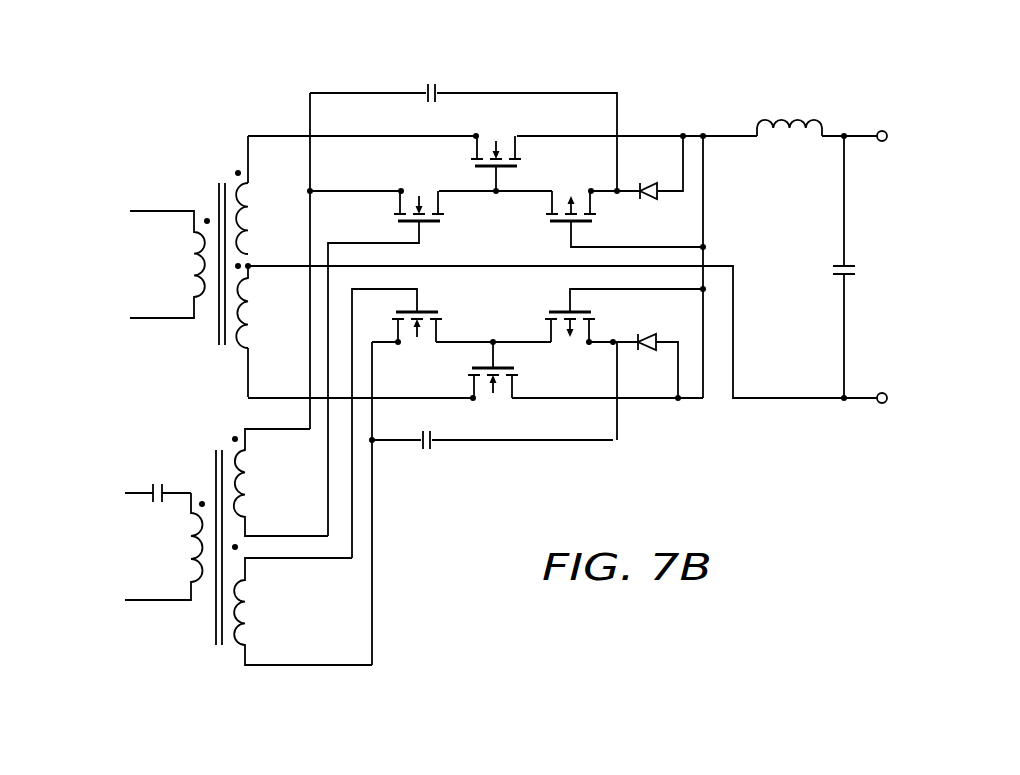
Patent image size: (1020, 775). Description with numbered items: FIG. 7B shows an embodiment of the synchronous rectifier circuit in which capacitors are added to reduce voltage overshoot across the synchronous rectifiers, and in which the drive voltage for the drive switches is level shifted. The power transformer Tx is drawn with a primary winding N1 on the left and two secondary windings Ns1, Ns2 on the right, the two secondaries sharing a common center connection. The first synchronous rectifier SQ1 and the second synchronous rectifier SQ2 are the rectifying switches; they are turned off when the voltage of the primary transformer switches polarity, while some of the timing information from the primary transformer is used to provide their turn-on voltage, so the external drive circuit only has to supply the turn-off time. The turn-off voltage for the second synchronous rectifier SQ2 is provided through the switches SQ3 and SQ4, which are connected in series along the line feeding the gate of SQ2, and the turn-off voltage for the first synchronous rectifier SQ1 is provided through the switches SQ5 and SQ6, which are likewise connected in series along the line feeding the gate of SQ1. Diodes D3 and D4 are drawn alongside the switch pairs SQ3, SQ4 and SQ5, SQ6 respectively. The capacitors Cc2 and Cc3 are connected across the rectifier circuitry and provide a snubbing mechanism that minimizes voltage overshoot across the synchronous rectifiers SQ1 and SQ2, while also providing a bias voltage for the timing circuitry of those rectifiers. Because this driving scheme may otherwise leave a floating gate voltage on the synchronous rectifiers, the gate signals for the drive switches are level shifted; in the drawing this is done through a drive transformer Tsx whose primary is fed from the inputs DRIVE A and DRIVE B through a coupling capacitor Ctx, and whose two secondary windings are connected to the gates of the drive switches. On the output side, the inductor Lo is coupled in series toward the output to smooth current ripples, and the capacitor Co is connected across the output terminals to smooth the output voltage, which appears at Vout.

The main power transformer Tx is at (223, 244).
The primary winding of transformer Tx N1 is at (170, 264).
The first secondary winding Ns1 is at (258, 219).
The second secondary winding Ns2 is at (259, 305).
The capacitor Cc2 is at (431, 80).
The capacitor Cc3 is at (405, 454).
The first synchronous rectifier SQ1 is at (493, 380).
The second synchronous rectifier SQ2 is at (496, 154).
The switch SQ3 is at (626, 208).
The switch SQ4 is at (375, 194).
The switch SQ5 is at (417, 340).
The switch SQ6 is at (625, 327).
The diode D3 is at (661, 166).
The diode D4 is at (645, 367).
The inductor Lo is at (761, 119).
The capacitor Co is at (830, 267).
The output voltage terminals Vout is at (902, 267).
The drive transformer Tsx is at (248, 538).
The drive coupling capacitor Ctx is at (158, 480).
The drive signal A input DRIVE A is at (83, 495).
The drive signal B input DRIVE B is at (83, 601).